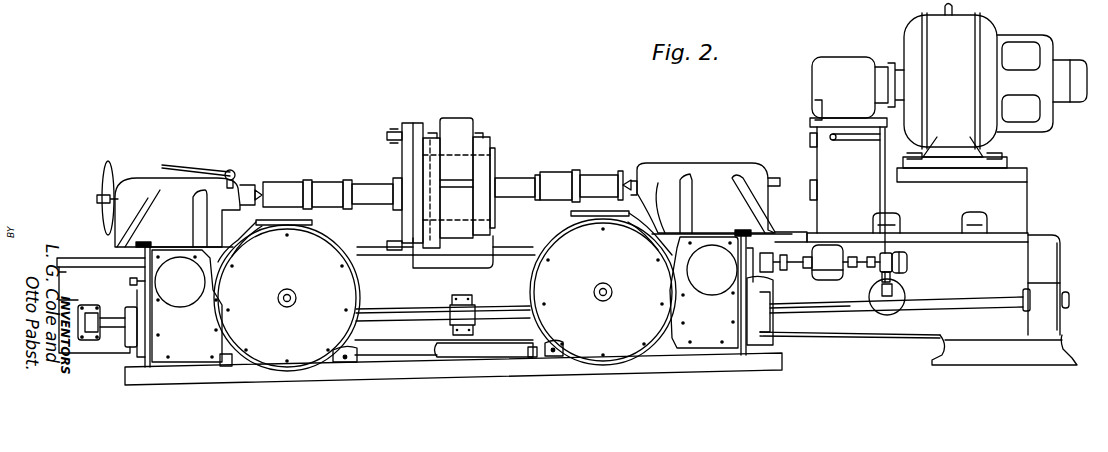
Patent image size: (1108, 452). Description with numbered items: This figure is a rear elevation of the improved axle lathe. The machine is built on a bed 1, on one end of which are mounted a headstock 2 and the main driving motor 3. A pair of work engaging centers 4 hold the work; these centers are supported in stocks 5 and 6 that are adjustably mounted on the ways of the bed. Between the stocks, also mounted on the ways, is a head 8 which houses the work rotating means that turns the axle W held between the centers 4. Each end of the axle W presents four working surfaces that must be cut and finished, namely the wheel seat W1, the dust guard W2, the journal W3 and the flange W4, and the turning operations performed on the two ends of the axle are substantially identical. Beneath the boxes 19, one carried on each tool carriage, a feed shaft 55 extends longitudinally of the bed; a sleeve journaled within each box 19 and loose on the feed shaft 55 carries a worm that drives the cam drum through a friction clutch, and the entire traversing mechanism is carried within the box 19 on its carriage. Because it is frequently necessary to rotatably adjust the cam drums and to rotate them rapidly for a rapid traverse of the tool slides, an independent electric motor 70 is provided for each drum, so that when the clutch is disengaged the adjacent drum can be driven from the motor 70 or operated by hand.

The bed 1 is at (92, 270).
The headstock 2 is at (812, 82).
The main driving motor 3 is at (906, 38).
The work engaging centers 4 is at (258, 183).
The stock 5 is at (708, 163).
The stock 6 is at (160, 180).
The head 8 is at (452, 127).
The box 19 is at (298, 360).
The feed shaft 55 is at (397, 312).
The electric motor 70 is at (180, 300).
The axle W is at (373, 184).
The wheel seat W1 is at (332, 182).
The dust guard W2 is at (310, 181).
The journal W3 is at (293, 182).
The flange W4 is at (270, 182).